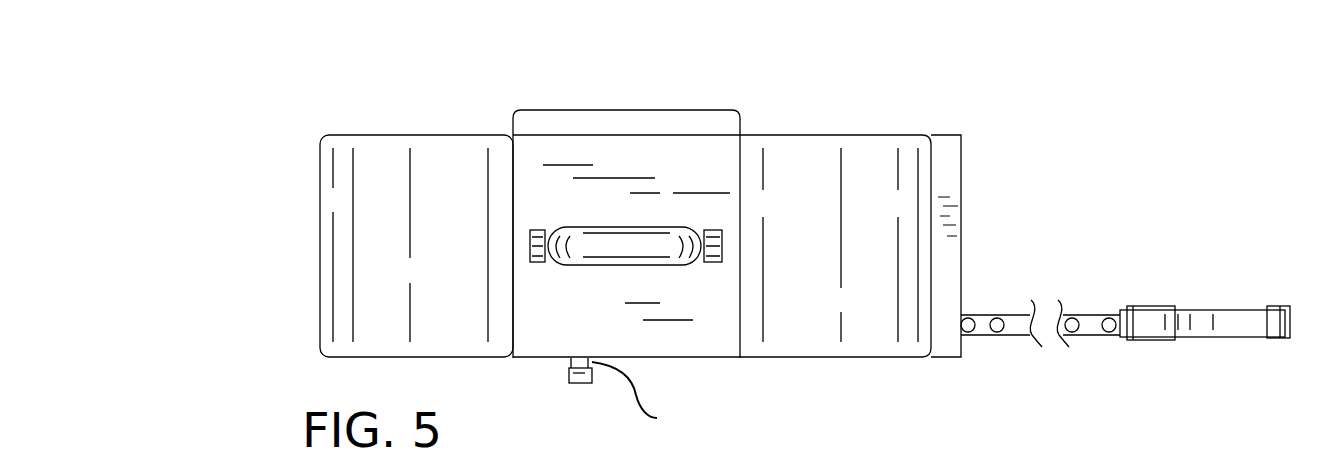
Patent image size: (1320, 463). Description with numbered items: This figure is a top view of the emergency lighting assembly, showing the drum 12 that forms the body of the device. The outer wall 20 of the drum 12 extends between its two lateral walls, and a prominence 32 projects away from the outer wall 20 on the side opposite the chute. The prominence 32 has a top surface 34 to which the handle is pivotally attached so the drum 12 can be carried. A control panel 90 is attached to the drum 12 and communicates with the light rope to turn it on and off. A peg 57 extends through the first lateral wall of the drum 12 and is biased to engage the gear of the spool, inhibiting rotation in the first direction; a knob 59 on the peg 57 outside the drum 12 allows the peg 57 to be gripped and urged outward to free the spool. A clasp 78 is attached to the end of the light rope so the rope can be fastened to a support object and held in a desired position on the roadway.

The drum 12 is at (321, 137).
The prominence 32 is at (513, 200).
The control panel 90 is at (576, 110).
The top surface 34 is at (714, 155).
The outer wall 20 is at (841, 200).
The clasp 78 is at (1225, 310).
The knob 59 is at (583, 383).
The peg 57 is at (645, 401).